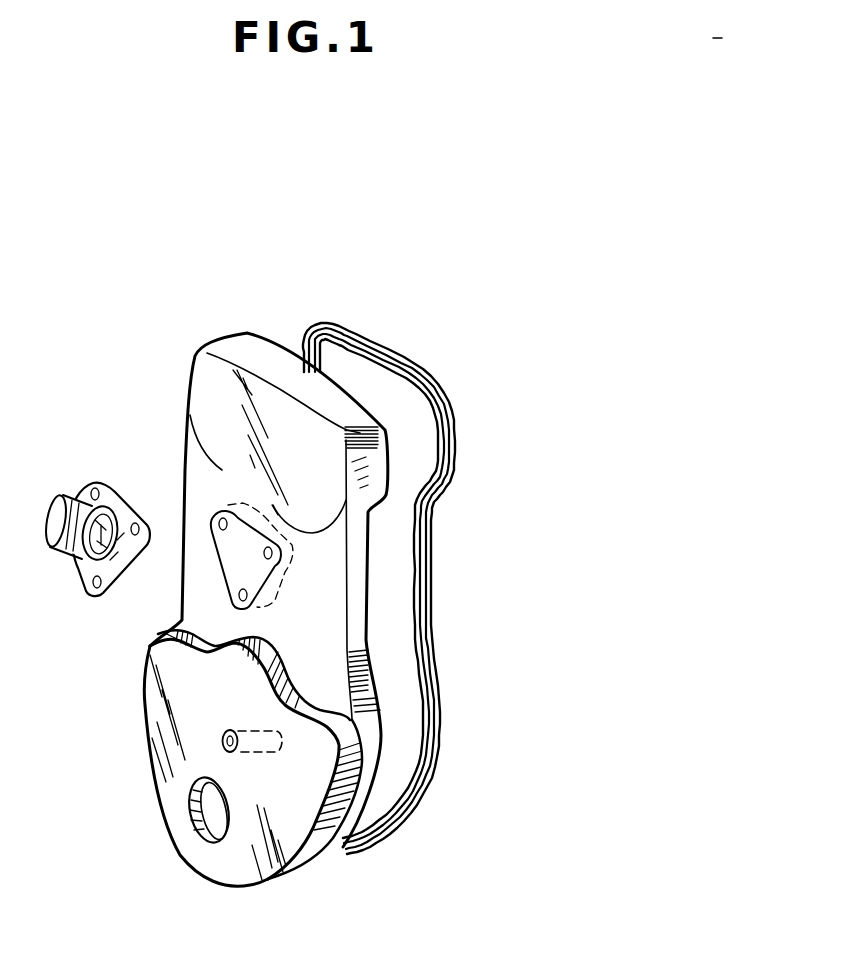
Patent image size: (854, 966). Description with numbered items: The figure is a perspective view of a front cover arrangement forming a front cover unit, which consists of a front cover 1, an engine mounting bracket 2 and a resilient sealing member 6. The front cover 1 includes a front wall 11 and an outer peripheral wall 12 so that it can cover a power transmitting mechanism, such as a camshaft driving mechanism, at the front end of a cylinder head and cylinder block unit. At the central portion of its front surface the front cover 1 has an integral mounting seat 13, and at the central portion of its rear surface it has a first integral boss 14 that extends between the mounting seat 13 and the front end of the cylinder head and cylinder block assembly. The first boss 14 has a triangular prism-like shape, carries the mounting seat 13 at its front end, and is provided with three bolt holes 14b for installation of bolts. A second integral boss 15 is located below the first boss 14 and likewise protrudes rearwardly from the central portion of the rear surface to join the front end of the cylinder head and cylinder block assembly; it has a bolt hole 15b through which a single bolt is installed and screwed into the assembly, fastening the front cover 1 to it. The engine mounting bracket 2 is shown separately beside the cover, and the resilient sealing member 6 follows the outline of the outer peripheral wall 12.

The front cover 1 is at (228, 337).
The front wall 11 is at (210, 403).
The outer peripheral wall 12 is at (323, 398).
The resilient sealing member 6 is at (447, 417).
The engine mounting bracket 2 is at (120, 500).
The mounting seat 13 is at (258, 567).
The first integral boss 14 is at (273, 592).
The bolt holes 14b is at (240, 592).
The bolt hole 15b is at (222, 738).
The second integral boss 15 is at (283, 742).